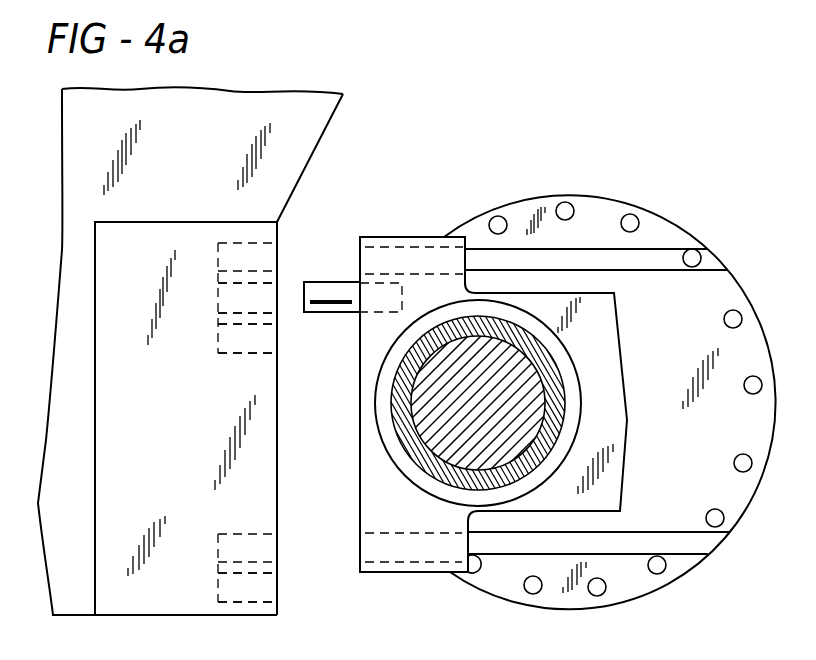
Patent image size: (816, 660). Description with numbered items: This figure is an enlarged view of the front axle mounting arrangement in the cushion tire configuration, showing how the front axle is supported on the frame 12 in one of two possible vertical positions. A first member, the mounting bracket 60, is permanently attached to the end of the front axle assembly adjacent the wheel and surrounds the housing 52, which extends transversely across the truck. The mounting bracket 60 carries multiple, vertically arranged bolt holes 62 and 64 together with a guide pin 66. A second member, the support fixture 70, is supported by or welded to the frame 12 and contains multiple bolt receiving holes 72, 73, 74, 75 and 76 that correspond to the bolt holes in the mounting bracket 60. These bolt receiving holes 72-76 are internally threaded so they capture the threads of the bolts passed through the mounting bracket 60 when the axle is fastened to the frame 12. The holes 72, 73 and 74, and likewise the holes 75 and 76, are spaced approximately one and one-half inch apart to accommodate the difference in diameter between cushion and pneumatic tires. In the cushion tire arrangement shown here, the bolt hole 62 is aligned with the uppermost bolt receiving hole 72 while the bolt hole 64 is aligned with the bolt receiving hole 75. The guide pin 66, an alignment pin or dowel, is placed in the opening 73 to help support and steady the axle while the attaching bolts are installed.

The frame 12 is at (76, 181).
The support fixture 70 is at (170, 417).
The bolt receiving hole 72 is at (218, 243).
The opening 73 is at (218, 298).
The bolt receiving hole 74 is at (218, 350).
The bolt receiving hole 75 is at (218, 540).
The bolt receiving hole 76 is at (218, 596).
The guide pin 66 is at (330, 282).
The bolt hole 62 is at (418, 247).
The bolt hole 64 is at (423, 572).
The mounting bracket 60 is at (612, 360).
The housing 52 is at (510, 437).